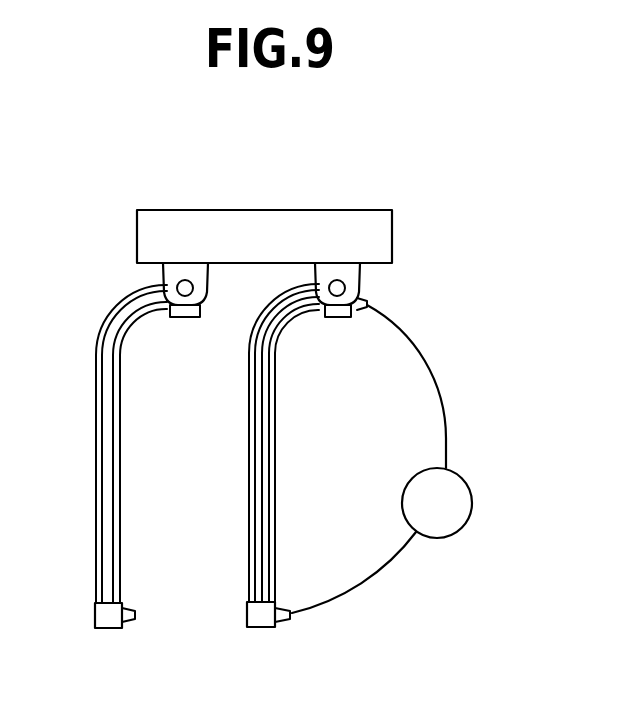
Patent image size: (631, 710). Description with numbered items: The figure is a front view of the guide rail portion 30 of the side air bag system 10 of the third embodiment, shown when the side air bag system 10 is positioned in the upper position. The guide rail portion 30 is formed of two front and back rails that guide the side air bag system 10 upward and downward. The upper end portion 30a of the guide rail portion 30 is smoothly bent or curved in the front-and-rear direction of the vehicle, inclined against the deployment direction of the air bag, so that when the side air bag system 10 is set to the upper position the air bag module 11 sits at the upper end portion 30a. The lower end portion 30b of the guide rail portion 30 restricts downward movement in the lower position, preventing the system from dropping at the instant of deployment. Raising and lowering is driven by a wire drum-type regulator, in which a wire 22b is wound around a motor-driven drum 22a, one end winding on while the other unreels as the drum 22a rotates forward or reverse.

The air bag module 11 is at (264, 195).
The side air bag system 10 is at (262, 210).
The guide rail portion 30 is at (122, 442).
The upper end portion 30a is at (170, 315).
The lower end portion 30b is at (93, 592).
The drum 22a is at (473, 503).
The wire 22b is at (268, 470).